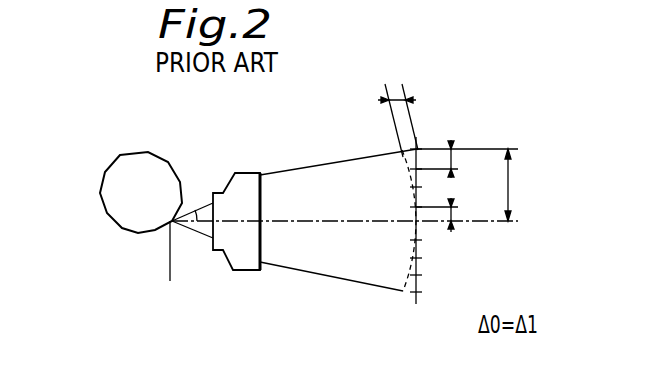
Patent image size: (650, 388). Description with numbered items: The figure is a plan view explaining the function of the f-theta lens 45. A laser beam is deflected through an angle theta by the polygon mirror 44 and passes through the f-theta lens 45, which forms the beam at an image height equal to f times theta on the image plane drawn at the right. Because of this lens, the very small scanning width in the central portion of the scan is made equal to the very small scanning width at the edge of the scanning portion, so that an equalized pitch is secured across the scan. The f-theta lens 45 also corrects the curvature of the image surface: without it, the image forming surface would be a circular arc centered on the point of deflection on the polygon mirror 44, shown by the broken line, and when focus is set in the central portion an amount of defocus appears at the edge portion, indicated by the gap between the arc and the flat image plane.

The polygon mirror 44 is at (137, 162).
The fθ lens 45 is at (235, 193).